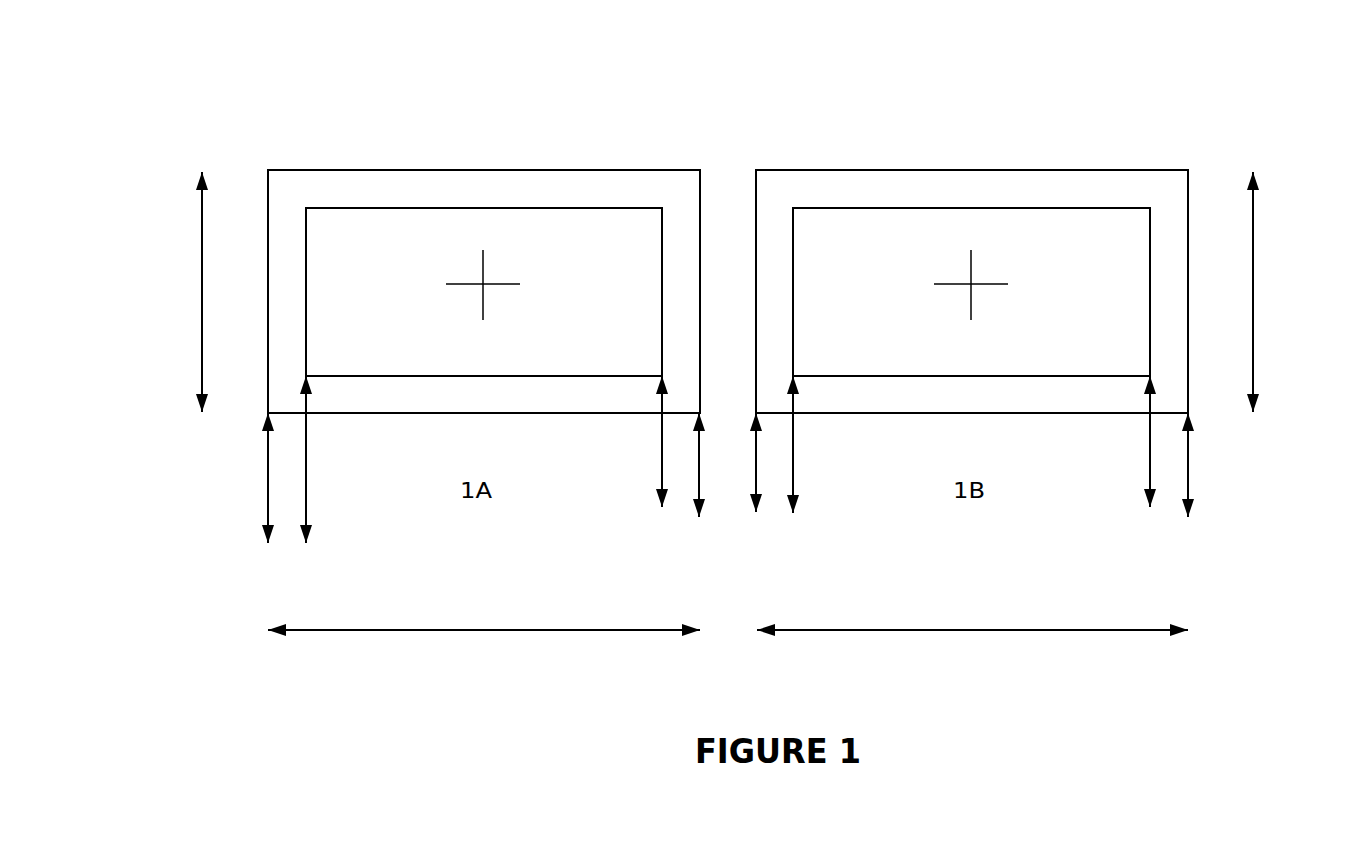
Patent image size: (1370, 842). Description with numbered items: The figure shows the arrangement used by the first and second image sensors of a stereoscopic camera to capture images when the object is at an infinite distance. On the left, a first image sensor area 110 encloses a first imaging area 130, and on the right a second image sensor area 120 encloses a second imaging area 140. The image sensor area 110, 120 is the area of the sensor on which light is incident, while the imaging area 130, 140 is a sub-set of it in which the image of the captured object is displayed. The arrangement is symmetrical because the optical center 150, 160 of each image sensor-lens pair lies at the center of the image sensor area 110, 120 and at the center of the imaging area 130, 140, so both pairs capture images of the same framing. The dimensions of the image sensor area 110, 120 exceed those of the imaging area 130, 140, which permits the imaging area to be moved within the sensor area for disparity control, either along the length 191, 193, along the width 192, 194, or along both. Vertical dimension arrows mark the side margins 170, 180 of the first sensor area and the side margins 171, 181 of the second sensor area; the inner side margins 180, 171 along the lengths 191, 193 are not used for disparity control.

The first image sensor area 110 is at (616, 170).
The second image sensor area 120 is at (1140, 170).
The first imaging area 130 is at (558, 208).
The second imaging area 140 is at (1085, 203).
The optical center 150 is at (483, 284).
The optical center 160 is at (971, 284).
The side margin 170 is at (286, 540).
The inner side margin 171 is at (773, 507).
The inner side margin 180 is at (672, 503).
The side margin 181 is at (1165, 500).
The length 191 is at (445, 643).
The width 192 is at (184, 268).
The length 193 is at (958, 643).
The width 194 is at (1265, 268).